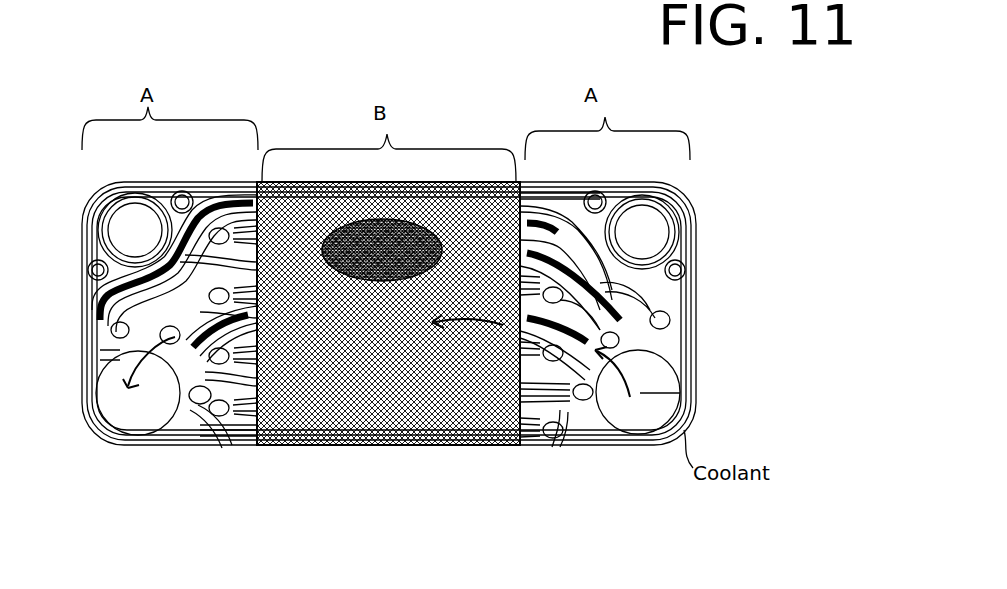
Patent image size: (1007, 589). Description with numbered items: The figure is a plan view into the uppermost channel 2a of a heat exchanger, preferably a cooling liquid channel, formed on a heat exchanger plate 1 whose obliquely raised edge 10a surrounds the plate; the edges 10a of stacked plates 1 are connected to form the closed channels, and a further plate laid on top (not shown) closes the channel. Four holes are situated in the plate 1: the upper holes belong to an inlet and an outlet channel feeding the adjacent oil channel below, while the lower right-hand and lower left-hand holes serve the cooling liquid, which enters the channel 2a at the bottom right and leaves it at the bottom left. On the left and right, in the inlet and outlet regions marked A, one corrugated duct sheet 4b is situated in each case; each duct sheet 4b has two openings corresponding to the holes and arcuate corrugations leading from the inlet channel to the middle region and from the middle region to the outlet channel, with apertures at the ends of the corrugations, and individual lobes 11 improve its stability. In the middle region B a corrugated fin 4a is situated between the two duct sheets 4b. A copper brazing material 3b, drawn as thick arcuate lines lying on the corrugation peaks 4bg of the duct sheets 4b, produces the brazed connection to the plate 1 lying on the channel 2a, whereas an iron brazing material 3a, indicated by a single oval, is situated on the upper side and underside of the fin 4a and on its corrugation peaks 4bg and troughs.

The heat exchanger plate 1 is at (453, 313).
The obliquely raised edge 10a is at (698, 236).
The lobe 11 is at (92, 262).
The cooling liquid channel 2a is at (100, 294).
The iron brazing material 3a is at (398, 280).
The copper brazing material 3b is at (143, 440).
The corrugated fin 4a is at (331, 449).
The corrugated duct sheet 4b is at (207, 443).
The corrugation peak 4bg is at (203, 191).